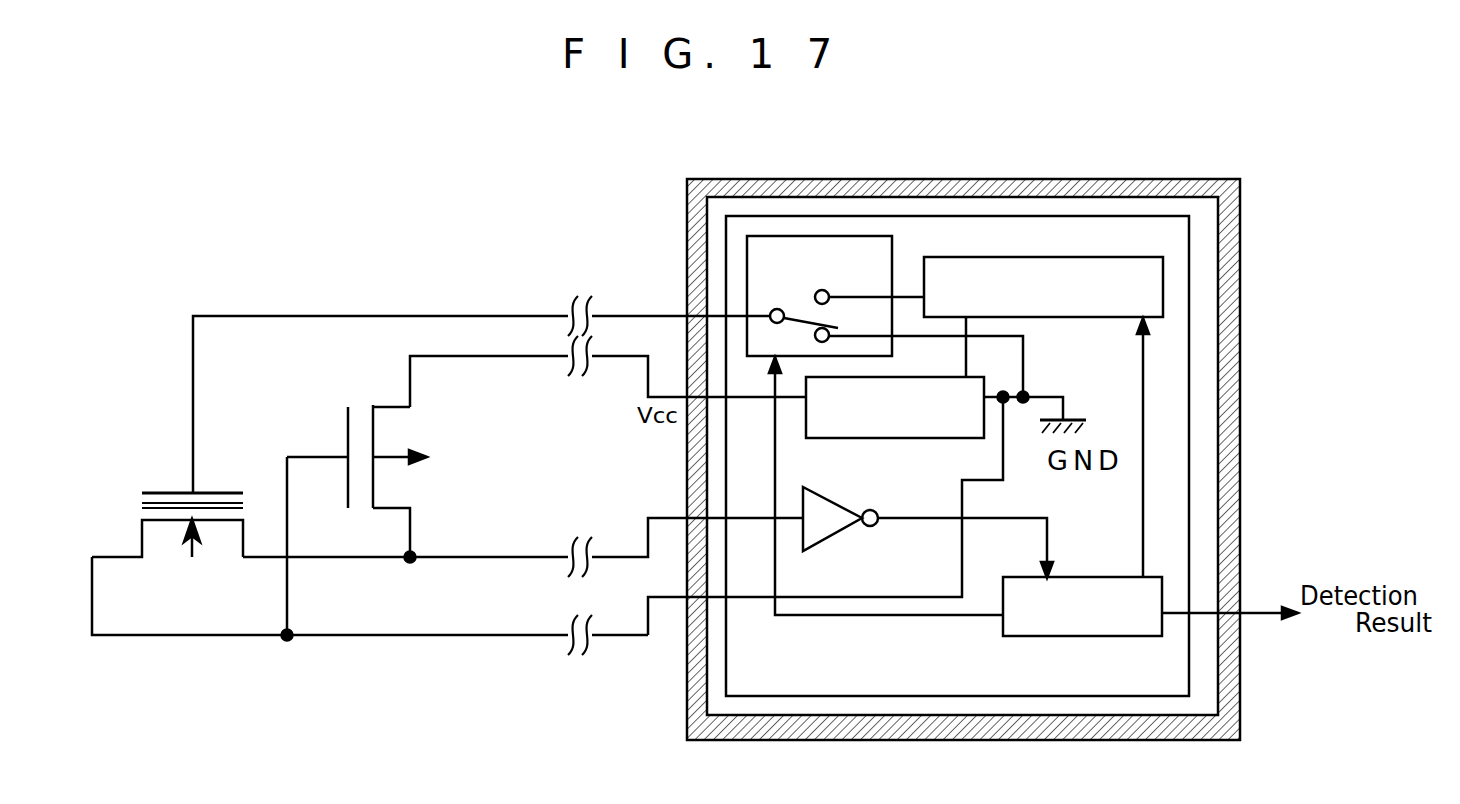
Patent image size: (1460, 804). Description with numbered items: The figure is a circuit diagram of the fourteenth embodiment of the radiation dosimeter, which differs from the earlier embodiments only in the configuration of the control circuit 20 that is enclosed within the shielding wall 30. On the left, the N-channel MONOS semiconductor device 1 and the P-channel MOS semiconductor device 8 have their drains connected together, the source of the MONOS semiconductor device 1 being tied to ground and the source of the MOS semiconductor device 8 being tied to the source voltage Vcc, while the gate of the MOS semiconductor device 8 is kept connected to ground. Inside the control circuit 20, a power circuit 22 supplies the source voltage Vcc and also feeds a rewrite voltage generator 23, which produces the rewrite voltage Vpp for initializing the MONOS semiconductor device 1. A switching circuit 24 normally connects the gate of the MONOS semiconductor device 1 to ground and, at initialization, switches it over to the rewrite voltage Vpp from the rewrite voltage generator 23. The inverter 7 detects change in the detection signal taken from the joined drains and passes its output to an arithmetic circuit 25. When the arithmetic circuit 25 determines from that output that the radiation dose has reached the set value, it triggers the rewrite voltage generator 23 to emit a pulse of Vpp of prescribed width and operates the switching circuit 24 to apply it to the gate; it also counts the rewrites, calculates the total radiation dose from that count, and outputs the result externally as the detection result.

The N-channel MONOS semiconductor device 1 is at (155, 460).
The inverter 7 is at (840, 540).
The P-channel MOS semiconductor device 8 is at (432, 438).
The control circuit 20 is at (936, 688).
The power circuit 22 is at (935, 440).
The rewrite voltage generator 23 is at (1115, 318).
The switching circuit 24 is at (893, 248).
The arithmetic circuit 25 is at (1072, 577).
The shielding wall 30 is at (1243, 300).